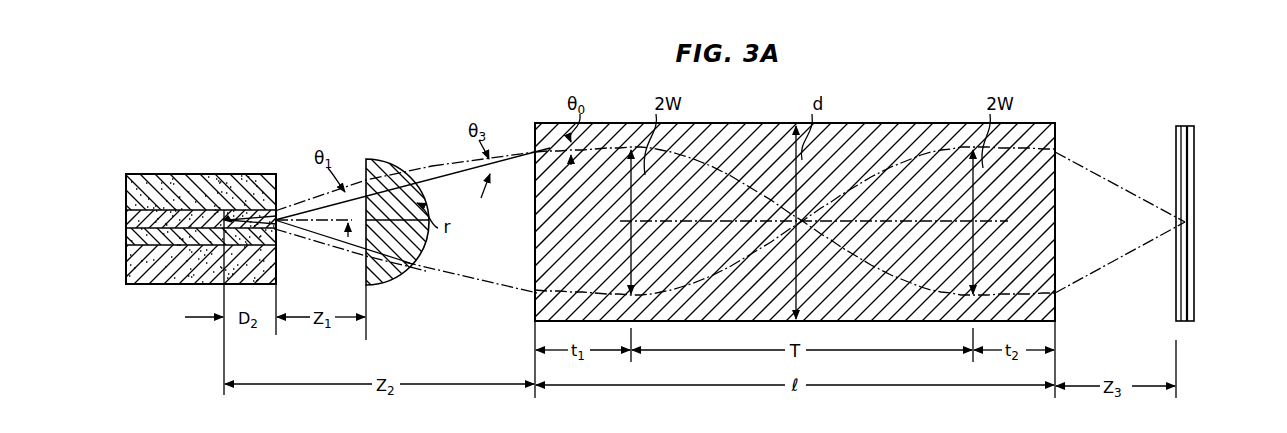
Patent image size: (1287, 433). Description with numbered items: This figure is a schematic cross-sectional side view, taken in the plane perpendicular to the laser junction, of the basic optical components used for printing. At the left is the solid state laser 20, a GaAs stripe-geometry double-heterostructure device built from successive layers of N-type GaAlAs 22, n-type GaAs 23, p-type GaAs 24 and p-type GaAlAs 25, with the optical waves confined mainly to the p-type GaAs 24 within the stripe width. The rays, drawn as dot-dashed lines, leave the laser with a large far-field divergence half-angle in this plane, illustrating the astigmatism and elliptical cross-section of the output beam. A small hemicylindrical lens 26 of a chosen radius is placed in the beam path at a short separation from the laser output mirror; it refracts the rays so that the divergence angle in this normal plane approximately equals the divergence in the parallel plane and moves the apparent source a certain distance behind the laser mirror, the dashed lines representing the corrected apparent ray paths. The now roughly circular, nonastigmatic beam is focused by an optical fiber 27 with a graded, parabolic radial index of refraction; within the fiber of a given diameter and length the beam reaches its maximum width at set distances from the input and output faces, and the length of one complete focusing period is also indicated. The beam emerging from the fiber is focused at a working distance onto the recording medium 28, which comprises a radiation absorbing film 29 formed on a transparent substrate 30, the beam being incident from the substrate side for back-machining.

The solid state laser 20 is at (197, 162).
The N-type GaAlAs layer 22 is at (156, 270).
The n-type GaAs layer 23 is at (126, 240).
The p-type GaAs layer 24 is at (126, 222).
The p-type GaAlAs layer 25 is at (126, 193).
The hemicylindrical lens 26 is at (385, 164).
The optical fiber 27 is at (908, 136).
The recording medium 28 is at (1174, 108).
The radiation absorbing film 29 is at (1190, 168).
The transparent substrate 30 is at (1178, 172).